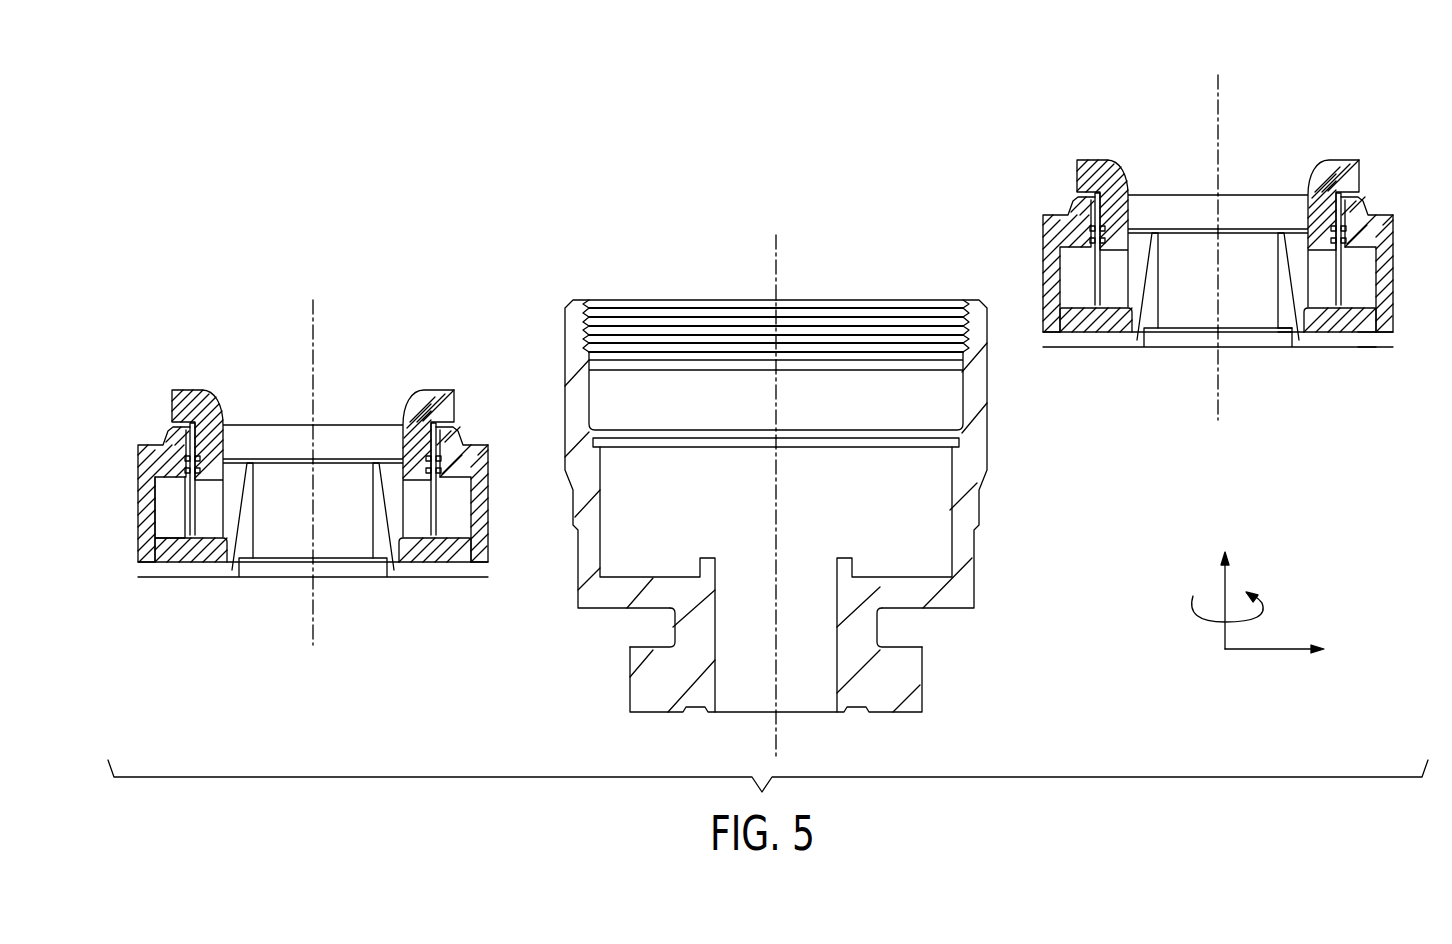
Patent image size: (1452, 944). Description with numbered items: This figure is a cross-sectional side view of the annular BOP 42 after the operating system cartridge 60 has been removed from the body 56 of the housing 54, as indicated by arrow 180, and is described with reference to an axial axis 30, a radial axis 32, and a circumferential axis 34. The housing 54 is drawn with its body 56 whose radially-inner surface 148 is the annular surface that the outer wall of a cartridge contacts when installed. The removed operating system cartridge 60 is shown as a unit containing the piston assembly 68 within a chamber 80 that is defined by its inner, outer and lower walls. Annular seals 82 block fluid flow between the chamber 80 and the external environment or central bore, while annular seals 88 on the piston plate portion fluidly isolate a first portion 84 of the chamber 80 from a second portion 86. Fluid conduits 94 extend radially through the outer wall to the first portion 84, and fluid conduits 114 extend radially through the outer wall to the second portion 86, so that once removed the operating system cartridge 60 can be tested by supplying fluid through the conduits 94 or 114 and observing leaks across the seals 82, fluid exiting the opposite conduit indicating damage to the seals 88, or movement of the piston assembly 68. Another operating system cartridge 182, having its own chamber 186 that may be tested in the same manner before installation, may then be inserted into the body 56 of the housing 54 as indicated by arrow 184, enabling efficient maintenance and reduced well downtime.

The axial axis 30 is at (1241, 638).
The radial axis 32 is at (1268, 650).
The circumferential axis 34 is at (1197, 620).
The annular BOP 42 is at (809, 500).
The housing 54 is at (940, 678).
The body 56 is at (912, 595).
The operating system cartridge 60 is at (1249, 137).
The piston assembly 68 is at (1320, 334).
The chamber 80 is at (1360, 285).
The annular seals 82 is at (1322, 228).
The first portion of the chamber 84 is at (1320, 288).
The second portion of the chamber 86 is at (1372, 335).
The annular seals 88 is at (1354, 330).
The fluid conduits 94 is at (1397, 225).
The fluid conduits 114 is at (1385, 340).
The radially-inner surface 148 is at (970, 480).
The arrow 180 is at (1172, 242).
The operating system cartridge 182 is at (213, 595).
The arrow 184 is at (325, 443).
The chamber 186 is at (172, 513).